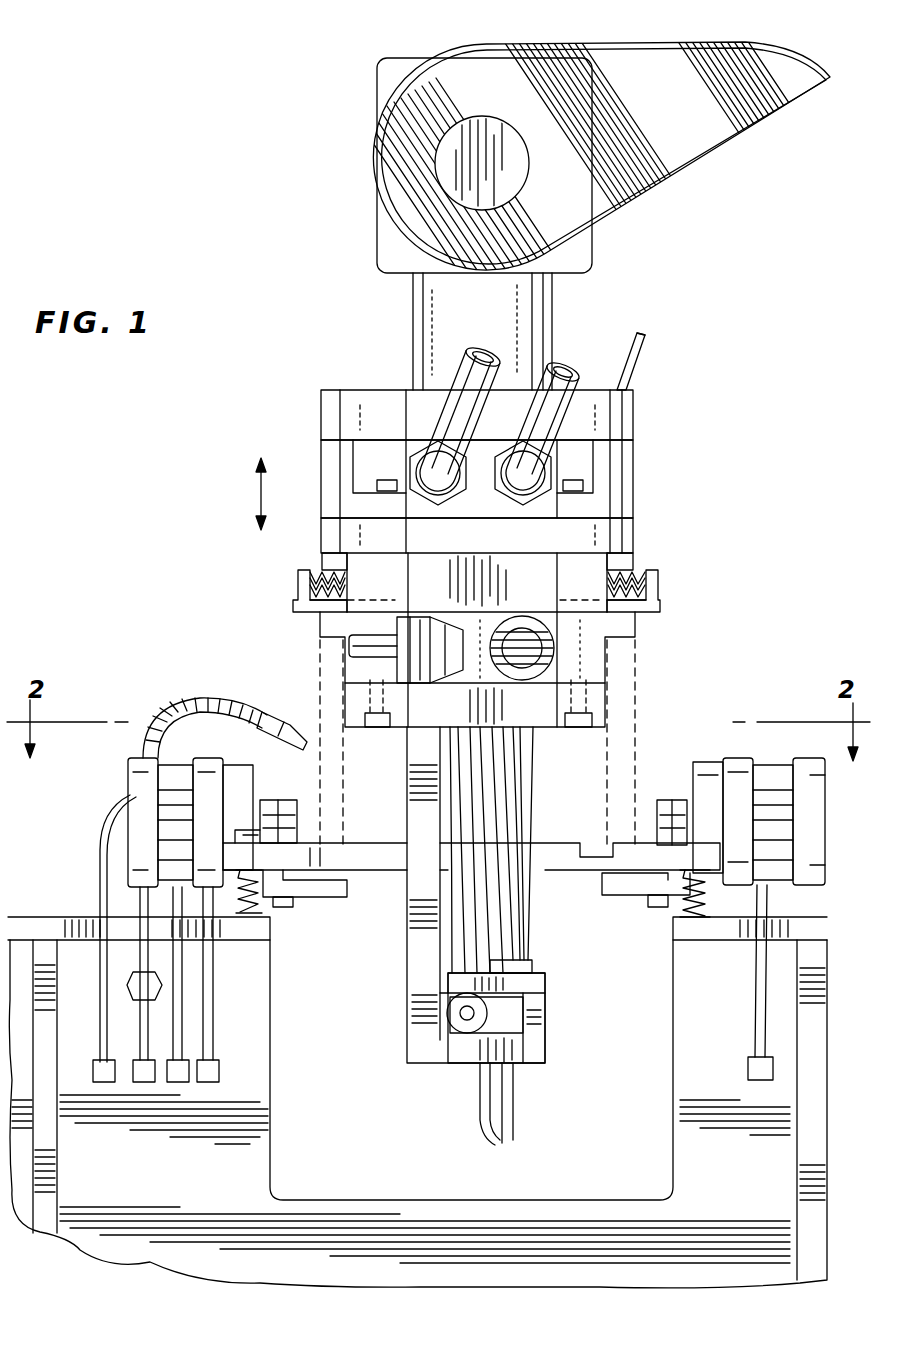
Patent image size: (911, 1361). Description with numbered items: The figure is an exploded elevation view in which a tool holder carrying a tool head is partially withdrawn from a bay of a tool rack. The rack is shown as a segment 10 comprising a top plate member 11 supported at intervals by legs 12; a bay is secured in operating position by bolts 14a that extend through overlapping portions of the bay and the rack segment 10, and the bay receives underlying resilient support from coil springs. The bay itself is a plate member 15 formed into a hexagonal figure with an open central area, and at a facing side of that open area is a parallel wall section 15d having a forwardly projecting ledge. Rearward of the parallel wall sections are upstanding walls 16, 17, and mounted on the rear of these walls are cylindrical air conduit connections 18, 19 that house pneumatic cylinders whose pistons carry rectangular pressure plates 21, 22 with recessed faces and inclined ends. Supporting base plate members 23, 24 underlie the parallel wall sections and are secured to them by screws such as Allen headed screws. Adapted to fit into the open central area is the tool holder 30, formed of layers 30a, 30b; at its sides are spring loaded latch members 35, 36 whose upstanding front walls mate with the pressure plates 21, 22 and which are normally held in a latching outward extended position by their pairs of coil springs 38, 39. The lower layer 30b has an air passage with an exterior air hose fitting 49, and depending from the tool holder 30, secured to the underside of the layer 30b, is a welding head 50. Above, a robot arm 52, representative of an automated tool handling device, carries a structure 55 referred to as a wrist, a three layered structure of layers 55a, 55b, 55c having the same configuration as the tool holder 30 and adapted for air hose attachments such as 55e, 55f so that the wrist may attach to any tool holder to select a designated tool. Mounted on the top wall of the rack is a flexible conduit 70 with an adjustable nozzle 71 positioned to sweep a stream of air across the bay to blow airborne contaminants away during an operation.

The segment 10 is at (730, 714).
The top plate member 11 is at (45, 925).
The legs 12 is at (58, 1170).
The bolts 14a is at (245, 830).
The plate member 15 is at (548, 842).
The parallel wall section 15d is at (708, 765).
The upstanding wall 16 is at (210, 765).
The upstanding wall 17 is at (738, 760).
The cylindrical air conduit connection 18 is at (133, 758).
The cylindrical air conduit connection 19 is at (826, 825).
The rectangular pressure plate 21 is at (297, 823).
The rectangular pressure plate 22 is at (657, 820).
The supporting base plate member 23 is at (330, 897).
The supporting base plate member 24 is at (623, 895).
The tool holder 30 is at (505, 686).
The layer 30a is at (522, 585).
The layer 30b is at (606, 667).
The spring loaded latch member 35 is at (296, 593).
The spring loaded latch member 36 is at (661, 590).
The coil springs 38 is at (320, 572).
The coil springs 39 is at (633, 573).
The air hose fitting 49 is at (345, 646).
The welding head 50 is at (414, 1072).
The robot arm 52 is at (676, 186).
The wrist 55 is at (549, 433).
The layer 55a is at (633, 422).
The layer 55b is at (633, 478).
The layer 55c is at (633, 537).
The air hose attachment 55e is at (470, 385).
The air hose attachment 55f is at (548, 372).
The flexible conduit 70 is at (183, 702).
The adjustable nozzle 71 is at (287, 717).